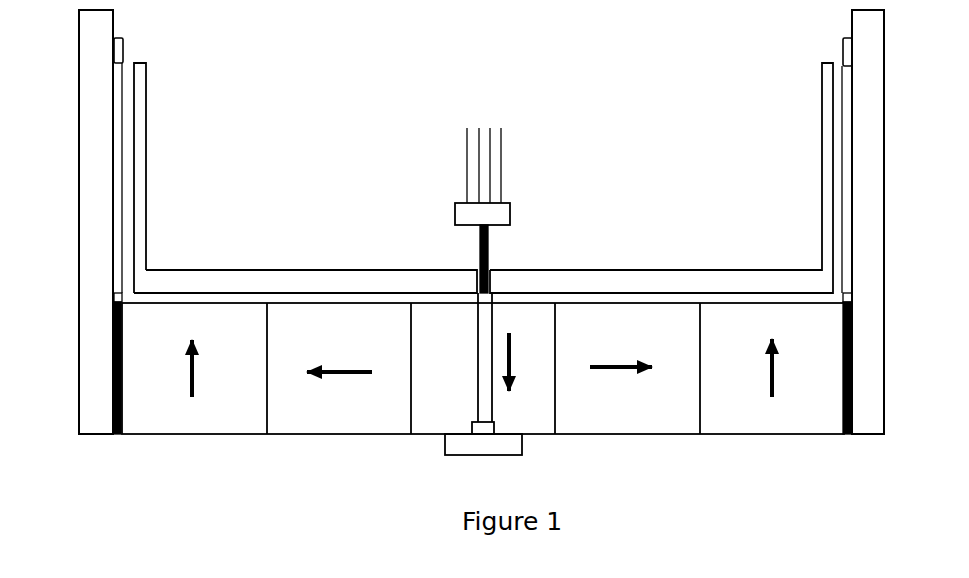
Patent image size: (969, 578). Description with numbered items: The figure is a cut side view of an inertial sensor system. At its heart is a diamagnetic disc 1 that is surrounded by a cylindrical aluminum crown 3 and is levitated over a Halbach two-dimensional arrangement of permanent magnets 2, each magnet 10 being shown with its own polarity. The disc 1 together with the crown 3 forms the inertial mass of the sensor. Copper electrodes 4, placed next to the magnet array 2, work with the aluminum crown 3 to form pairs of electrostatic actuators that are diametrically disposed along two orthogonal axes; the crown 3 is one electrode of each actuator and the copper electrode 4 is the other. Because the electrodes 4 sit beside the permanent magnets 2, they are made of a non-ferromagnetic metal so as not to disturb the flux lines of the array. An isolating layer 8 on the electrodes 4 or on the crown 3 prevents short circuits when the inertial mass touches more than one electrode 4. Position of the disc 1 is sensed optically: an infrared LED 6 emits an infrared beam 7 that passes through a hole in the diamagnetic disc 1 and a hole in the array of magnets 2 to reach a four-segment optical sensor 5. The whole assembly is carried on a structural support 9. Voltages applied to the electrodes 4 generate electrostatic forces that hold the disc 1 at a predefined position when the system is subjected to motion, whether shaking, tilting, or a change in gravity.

The diamagnetic disc 1 is at (353, 284).
The 2D arrangement of permanent magnets 2 is at (367, 435).
The aluminum crown 3 is at (143, 198).
The copper electrode 4 is at (117, 79).
The optical sensor 5 is at (513, 200).
The infrared LED 6 is at (492, 446).
The infrared beam 7 is at (490, 258).
The isolating layer 8 is at (841, 50).
The structural support 9 is at (86, 438).
The magnet with its polarity 10 is at (774, 420).